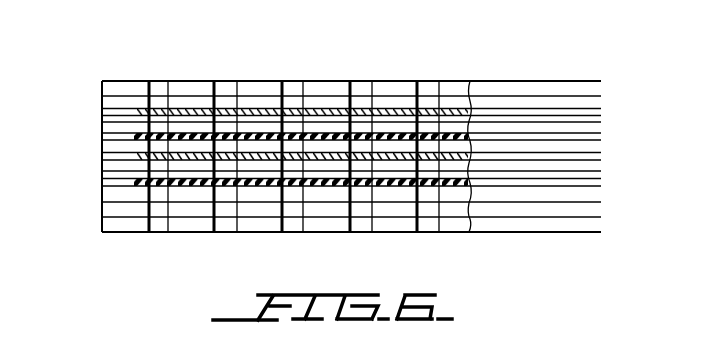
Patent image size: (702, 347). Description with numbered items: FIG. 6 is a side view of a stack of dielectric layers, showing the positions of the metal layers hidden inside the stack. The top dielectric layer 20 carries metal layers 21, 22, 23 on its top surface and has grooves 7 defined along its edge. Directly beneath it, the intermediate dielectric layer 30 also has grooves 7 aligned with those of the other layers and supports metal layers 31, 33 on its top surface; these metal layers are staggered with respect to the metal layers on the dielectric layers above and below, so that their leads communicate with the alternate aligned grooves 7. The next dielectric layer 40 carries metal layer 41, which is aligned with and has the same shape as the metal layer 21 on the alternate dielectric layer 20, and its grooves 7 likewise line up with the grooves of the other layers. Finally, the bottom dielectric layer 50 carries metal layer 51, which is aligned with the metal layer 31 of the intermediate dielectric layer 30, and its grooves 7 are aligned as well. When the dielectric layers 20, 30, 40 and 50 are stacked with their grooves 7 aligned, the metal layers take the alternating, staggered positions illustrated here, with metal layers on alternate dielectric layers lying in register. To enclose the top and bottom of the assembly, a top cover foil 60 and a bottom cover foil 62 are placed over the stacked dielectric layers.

The grooves 7 is at (222, 80).
The top dielectric layer 20 is at (107, 124).
The metal layer 21 is at (142, 112).
The metal layer 22 is at (253, 108).
The metal layer 23 is at (450, 107).
The dielectric layer 30 is at (107, 145).
The metal layer 31 is at (145, 134).
The metal layer 33 is at (470, 115).
The dielectric layer 40 is at (107, 167).
The metal layer 41 is at (177, 160).
The dielectric layer 50 is at (110, 192).
The metal layer 51 is at (142, 184).
The top cover foil 60 is at (389, 101).
The bottom cover foil 62 is at (377, 210).